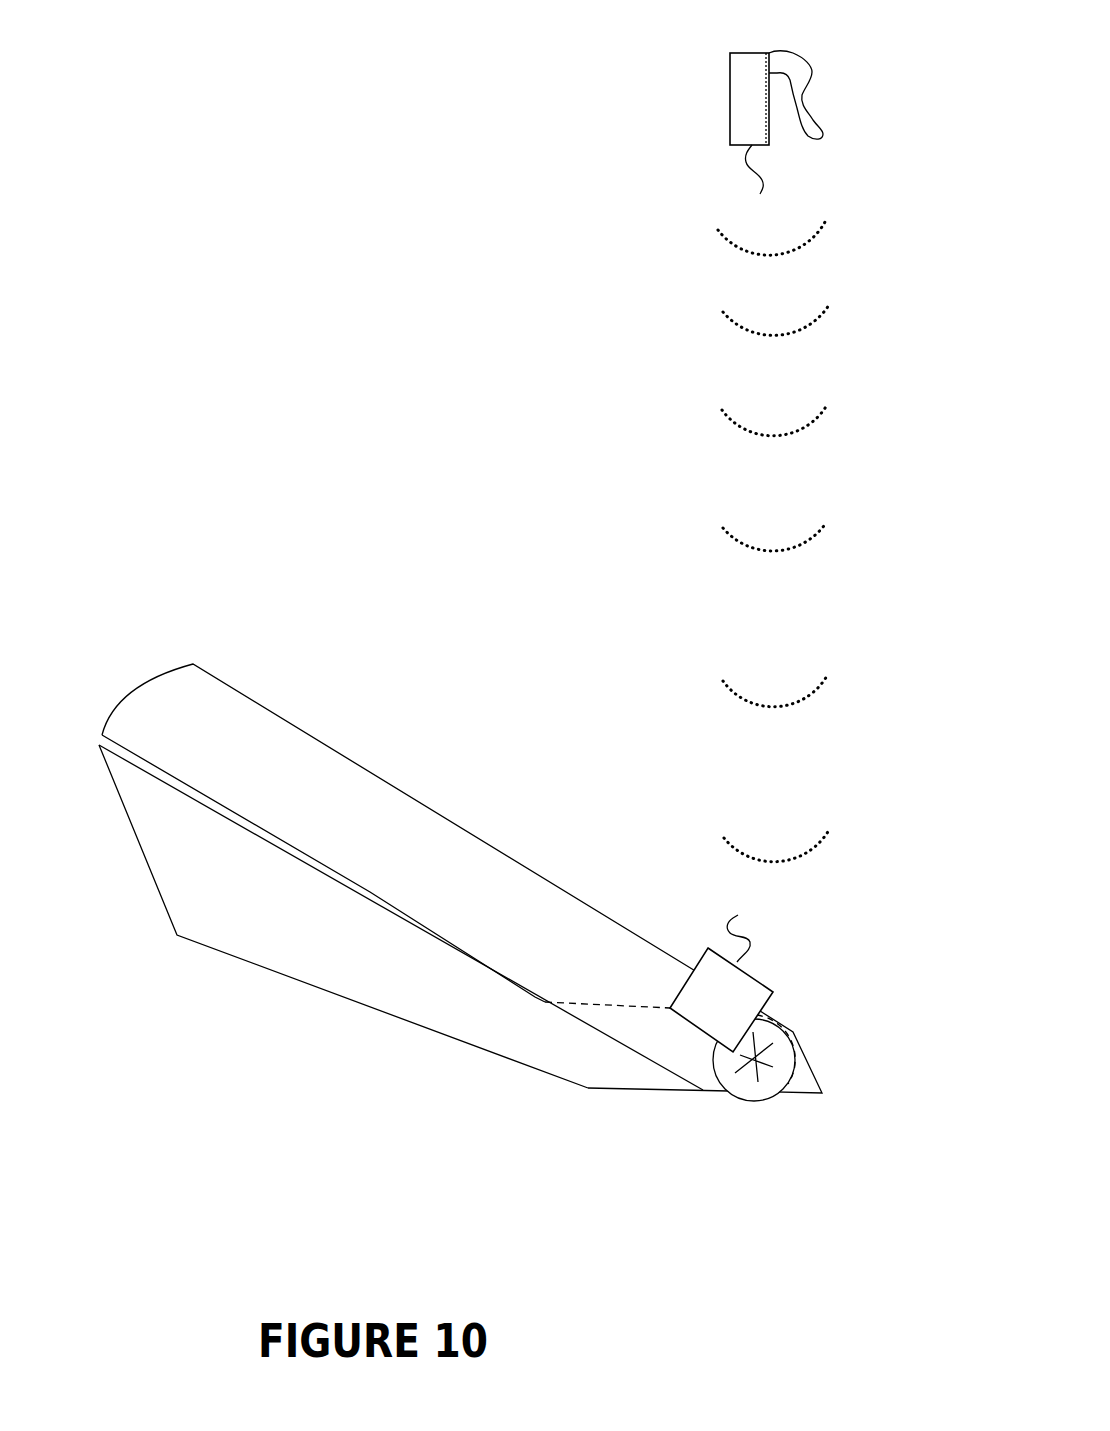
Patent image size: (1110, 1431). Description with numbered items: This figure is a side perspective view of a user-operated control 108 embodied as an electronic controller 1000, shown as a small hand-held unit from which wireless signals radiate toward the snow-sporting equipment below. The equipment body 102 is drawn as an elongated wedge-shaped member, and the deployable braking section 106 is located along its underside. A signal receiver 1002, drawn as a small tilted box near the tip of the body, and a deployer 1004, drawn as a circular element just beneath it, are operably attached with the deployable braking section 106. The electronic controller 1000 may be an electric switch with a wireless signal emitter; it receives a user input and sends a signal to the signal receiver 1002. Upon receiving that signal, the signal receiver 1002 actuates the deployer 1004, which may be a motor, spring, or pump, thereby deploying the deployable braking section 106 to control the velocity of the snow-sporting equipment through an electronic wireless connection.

The user-operated control 108 is at (701, 97).
The electronic controller 1000 is at (735, 81).
The housing body 102 is at (429, 863).
The deployable braking section 106 is at (403, 1034).
The signal receiver 1002 is at (703, 1034).
The deployer 1004 is at (777, 1097).